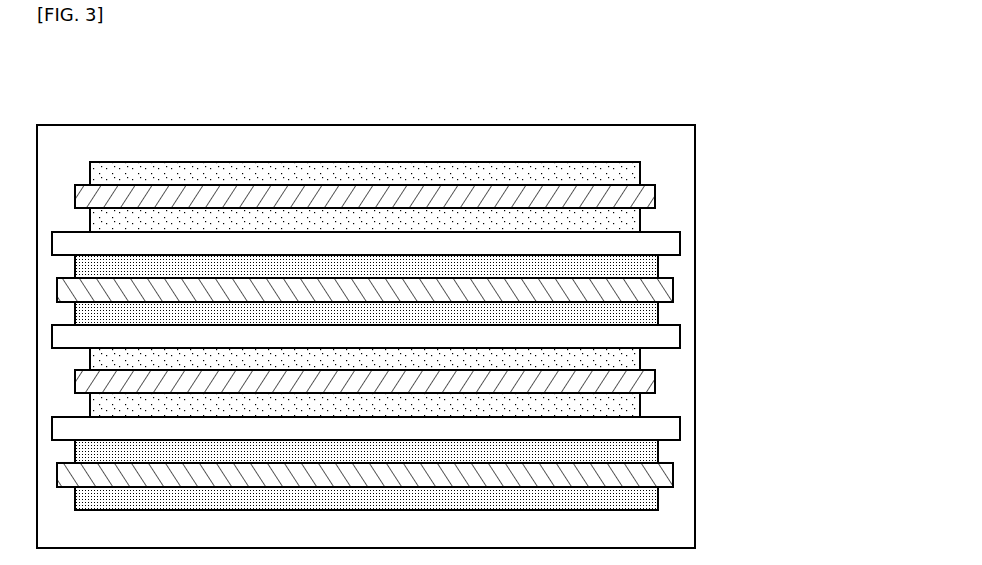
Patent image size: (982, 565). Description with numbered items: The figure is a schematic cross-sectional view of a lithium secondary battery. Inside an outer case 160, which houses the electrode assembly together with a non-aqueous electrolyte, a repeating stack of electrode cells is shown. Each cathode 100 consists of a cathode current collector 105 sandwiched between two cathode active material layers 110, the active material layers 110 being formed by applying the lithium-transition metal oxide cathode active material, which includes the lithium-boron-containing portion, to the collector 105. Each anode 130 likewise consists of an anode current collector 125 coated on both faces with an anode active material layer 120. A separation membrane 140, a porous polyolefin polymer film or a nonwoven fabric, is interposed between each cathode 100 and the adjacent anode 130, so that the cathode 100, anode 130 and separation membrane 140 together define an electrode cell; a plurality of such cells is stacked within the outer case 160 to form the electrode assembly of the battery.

The cathode 100 is at (455, 289).
The cathode current collector 105 is at (656, 195).
The cathode active material layer 110 is at (641, 170).
The anode active material layer 120 is at (659, 265).
The anode current collector 125 is at (674, 290).
The anode 130 is at (446, 382).
The separation membrane 140 is at (395, 245).
The outer case 160 is at (633, 125).